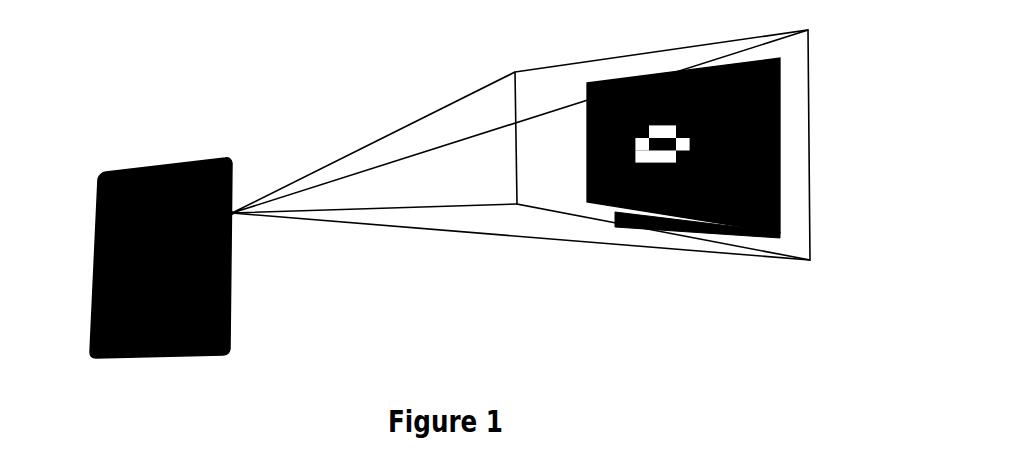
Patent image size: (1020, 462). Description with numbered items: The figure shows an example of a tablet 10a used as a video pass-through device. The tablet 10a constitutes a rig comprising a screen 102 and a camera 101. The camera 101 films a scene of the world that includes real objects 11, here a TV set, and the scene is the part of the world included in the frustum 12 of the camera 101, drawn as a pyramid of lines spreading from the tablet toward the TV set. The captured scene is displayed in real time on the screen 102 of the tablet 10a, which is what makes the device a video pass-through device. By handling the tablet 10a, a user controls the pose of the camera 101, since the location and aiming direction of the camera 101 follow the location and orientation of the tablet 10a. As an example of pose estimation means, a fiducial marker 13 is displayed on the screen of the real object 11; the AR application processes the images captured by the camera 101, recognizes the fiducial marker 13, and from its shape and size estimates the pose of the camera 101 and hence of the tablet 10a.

The tablet 10a is at (157, 173).
The camera 101 is at (237, 210).
The screen 102 is at (93, 302).
The real object 11 is at (783, 152).
The frustum 12 is at (513, 80).
The fiducial marker 13 is at (635, 142).